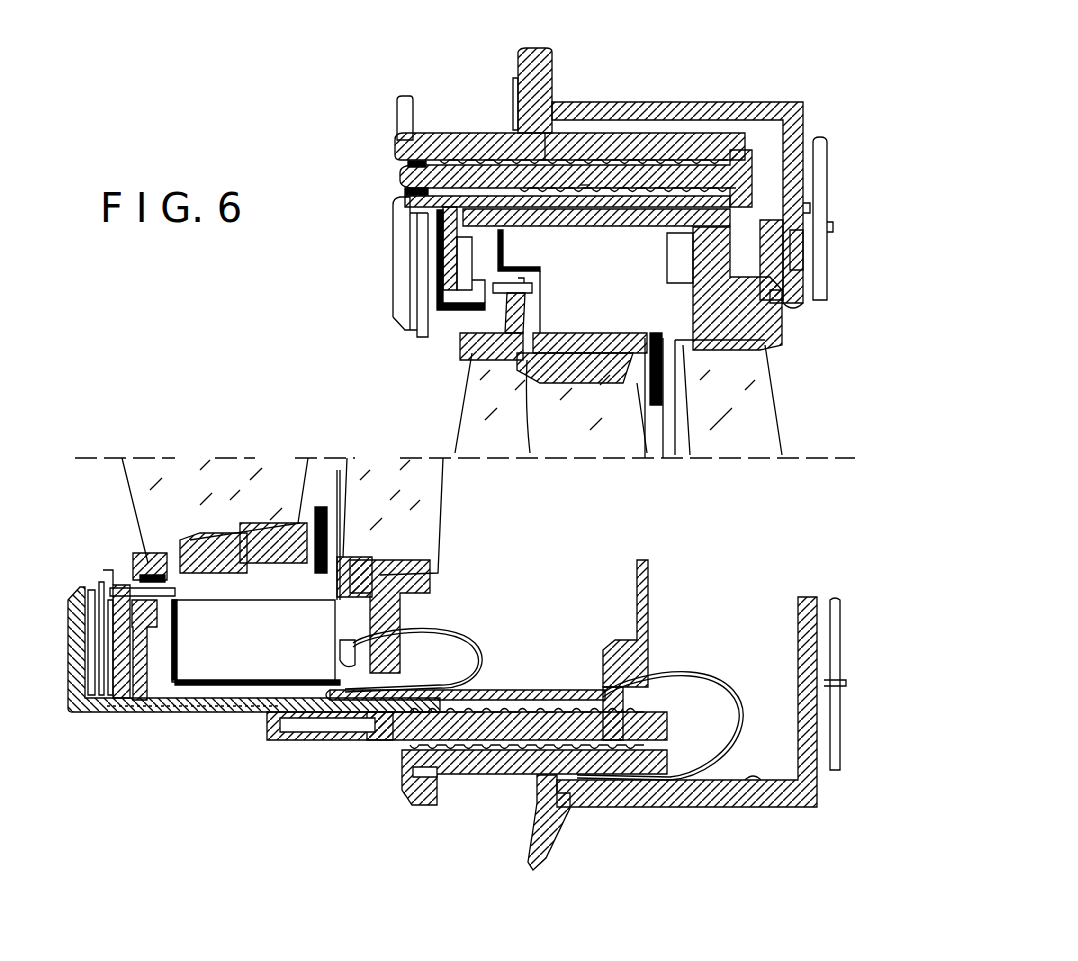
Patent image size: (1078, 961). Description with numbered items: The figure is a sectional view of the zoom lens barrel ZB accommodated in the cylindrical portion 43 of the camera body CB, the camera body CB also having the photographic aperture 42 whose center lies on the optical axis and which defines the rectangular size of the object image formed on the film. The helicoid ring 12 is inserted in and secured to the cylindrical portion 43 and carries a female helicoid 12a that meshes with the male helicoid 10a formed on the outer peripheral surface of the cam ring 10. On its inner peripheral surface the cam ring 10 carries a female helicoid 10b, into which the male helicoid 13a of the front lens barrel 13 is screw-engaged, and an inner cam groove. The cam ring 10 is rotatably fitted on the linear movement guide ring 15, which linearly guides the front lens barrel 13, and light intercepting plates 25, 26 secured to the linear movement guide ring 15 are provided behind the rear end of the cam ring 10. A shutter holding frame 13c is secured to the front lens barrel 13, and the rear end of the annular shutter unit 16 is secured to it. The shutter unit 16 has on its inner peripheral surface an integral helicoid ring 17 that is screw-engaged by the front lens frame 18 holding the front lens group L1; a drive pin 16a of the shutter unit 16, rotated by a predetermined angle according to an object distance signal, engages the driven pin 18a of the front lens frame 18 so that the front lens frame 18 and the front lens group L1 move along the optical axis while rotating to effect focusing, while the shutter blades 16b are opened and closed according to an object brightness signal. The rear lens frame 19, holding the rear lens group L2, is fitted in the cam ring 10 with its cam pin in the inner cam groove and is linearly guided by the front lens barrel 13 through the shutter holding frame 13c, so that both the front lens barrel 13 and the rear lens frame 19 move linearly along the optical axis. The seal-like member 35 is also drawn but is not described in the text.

The cam ring 10 is at (695, 180).
The male helicoid 10a is at (640, 162).
The female helicoid 10b is at (580, 187).
The helicoid ring 12 is at (490, 135).
The female helicoid 12a is at (548, 160).
The front lens barrel 13 is at (405, 202).
The male helicoid 13a is at (750, 190).
The shutter holding frame 13c is at (740, 240).
The linear movement guide ring 15 is at (608, 230).
The shutter unit 16 is at (495, 318).
The drive pin 16a is at (493, 288).
The shutter blades 16b is at (320, 510).
The helicoid ring 17 is at (505, 325).
The front lens frame 18 is at (530, 445).
The driven pin 18a is at (460, 290).
The rear lens frame 19 is at (783, 250).
The light intercepting plate 25 is at (770, 210).
The light intercepting plate 26 is at (790, 215).
The seal member 35 is at (400, 163).
The photographic aperture 42 is at (800, 308).
The cylindrical portion 43 is at (690, 128).
The camera body CB is at (805, 108).
The zoom lens barrel ZB is at (833, 46).
The front lens group L1 is at (200, 458).
The rear lens group L2 is at (382, 458).